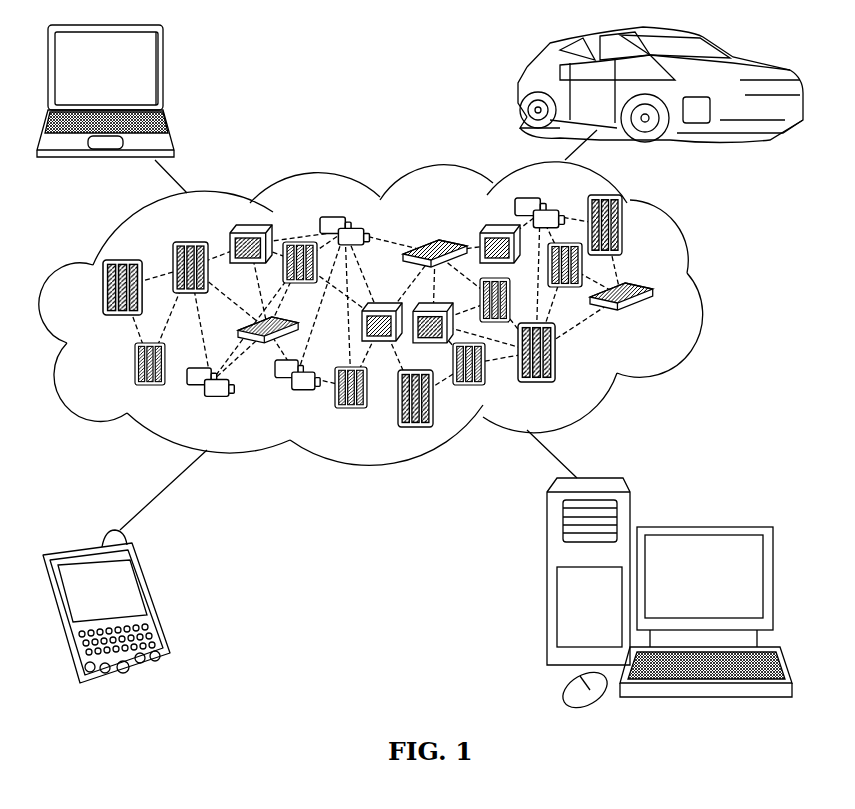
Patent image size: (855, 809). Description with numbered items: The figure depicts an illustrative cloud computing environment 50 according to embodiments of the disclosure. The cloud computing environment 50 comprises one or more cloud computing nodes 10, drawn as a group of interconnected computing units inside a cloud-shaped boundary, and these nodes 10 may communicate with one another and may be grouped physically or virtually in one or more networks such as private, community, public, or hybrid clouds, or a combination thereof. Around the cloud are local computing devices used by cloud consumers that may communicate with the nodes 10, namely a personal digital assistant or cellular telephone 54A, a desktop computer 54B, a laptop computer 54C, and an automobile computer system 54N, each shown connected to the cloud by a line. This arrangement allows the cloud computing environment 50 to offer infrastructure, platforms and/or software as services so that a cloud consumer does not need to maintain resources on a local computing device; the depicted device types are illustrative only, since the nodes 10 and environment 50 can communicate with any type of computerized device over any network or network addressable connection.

The cloud computing nodes 10 is at (661, 321).
The cloud computing environment 50 is at (703, 296).
The personal digital assistant (PDA) or cellular telephone 54A is at (157, 603).
The desktop computer 54B is at (703, 525).
The laptop computer 54C is at (163, 72).
The automobile computer system 54N is at (527, 90).